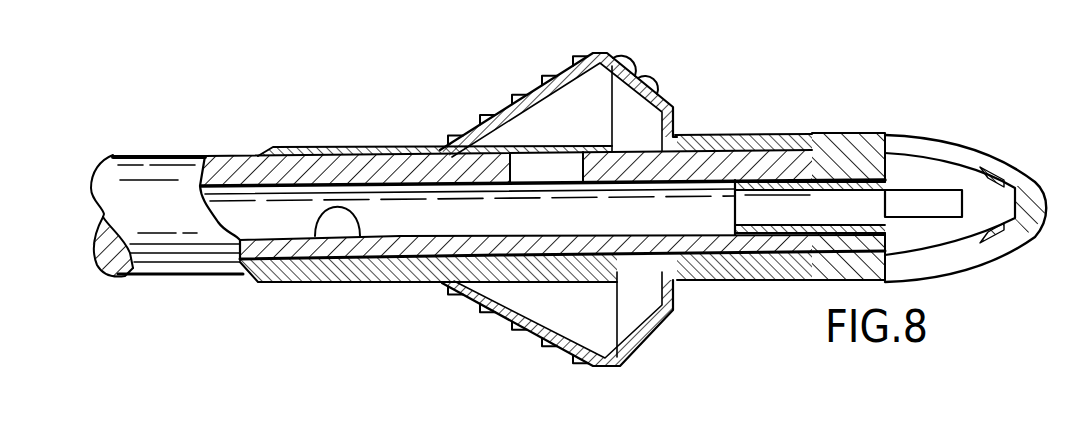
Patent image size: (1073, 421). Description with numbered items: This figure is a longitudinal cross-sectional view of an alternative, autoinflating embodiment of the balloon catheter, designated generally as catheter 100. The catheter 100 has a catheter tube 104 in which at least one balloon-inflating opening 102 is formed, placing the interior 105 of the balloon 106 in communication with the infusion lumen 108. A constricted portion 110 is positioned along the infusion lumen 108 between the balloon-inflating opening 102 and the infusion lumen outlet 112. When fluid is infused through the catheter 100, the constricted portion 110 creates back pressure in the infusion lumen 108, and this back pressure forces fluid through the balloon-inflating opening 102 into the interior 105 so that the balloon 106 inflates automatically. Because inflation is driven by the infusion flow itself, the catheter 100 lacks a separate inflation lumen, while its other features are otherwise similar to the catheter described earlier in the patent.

The catheter 100 is at (728, 74).
The balloon-inflating opening 102 is at (516, 167).
The catheter tube 104 is at (190, 157).
The interior of the balloon 105 is at (563, 112).
The balloon 106 is at (636, 59).
The infusion lumen 108 is at (317, 233).
The constricted portion 110 is at (728, 187).
The infusion lumen outlet 112 is at (940, 201).